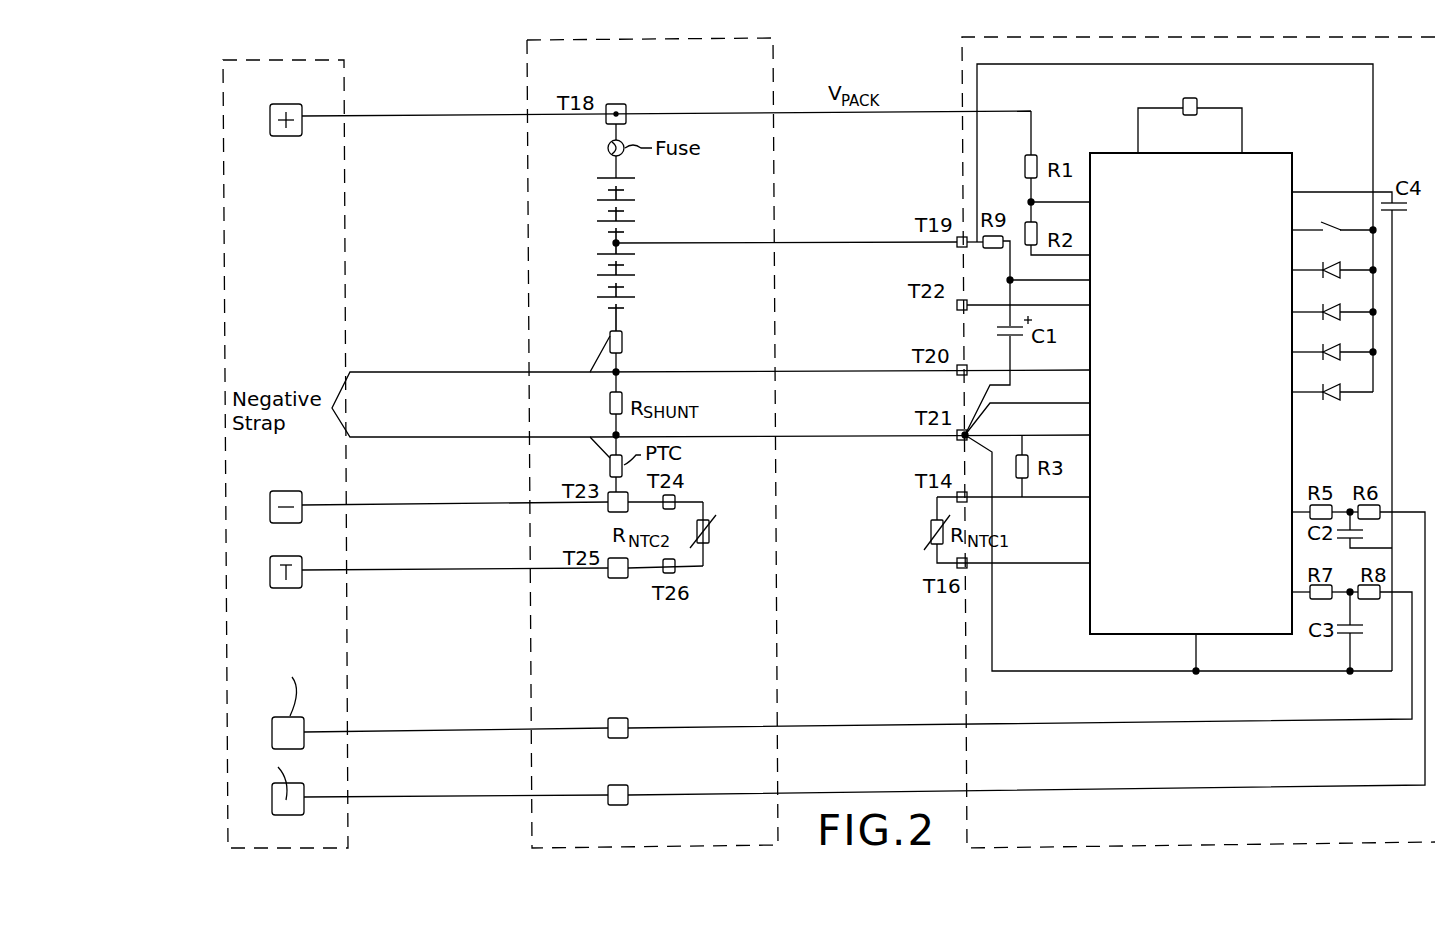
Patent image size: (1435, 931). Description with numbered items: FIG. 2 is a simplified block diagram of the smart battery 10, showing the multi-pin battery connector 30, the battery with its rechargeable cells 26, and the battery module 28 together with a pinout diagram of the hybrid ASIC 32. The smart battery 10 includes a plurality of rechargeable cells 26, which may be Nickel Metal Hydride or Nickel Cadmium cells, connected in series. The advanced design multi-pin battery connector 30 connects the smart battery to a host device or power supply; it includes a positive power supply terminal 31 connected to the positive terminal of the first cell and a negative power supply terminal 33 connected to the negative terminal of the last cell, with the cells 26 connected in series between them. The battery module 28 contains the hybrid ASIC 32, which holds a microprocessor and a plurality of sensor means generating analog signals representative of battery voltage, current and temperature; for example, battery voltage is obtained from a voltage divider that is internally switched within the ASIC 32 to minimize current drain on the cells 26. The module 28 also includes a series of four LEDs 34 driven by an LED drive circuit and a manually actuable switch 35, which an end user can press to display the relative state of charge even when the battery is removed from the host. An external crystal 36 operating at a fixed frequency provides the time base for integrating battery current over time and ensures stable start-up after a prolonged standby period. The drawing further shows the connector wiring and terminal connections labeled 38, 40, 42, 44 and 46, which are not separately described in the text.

The smart battery 10 is at (822, 53).
The rechargeable cells 26 is at (527, 43).
The battery module 28 is at (962, 42).
The multi-pin battery connector 30 is at (318, 62).
The positive power supply terminal 31 is at (300, 109).
The hybrid ASIC 32 is at (1196, 246).
The negative power supply terminal 33 is at (300, 498).
The LEDs 34 is at (1396, 225).
The manually actuable switch 35 is at (1366, 198).
The external crystal 36 is at (1198, 97).
The clock line 38 is at (448, 797).
The data line 40 is at (448, 730).
The temperature line 42 is at (448, 568).
The battery cells 44 is at (590, 170).
The cell tap 46 is at (618, 242).